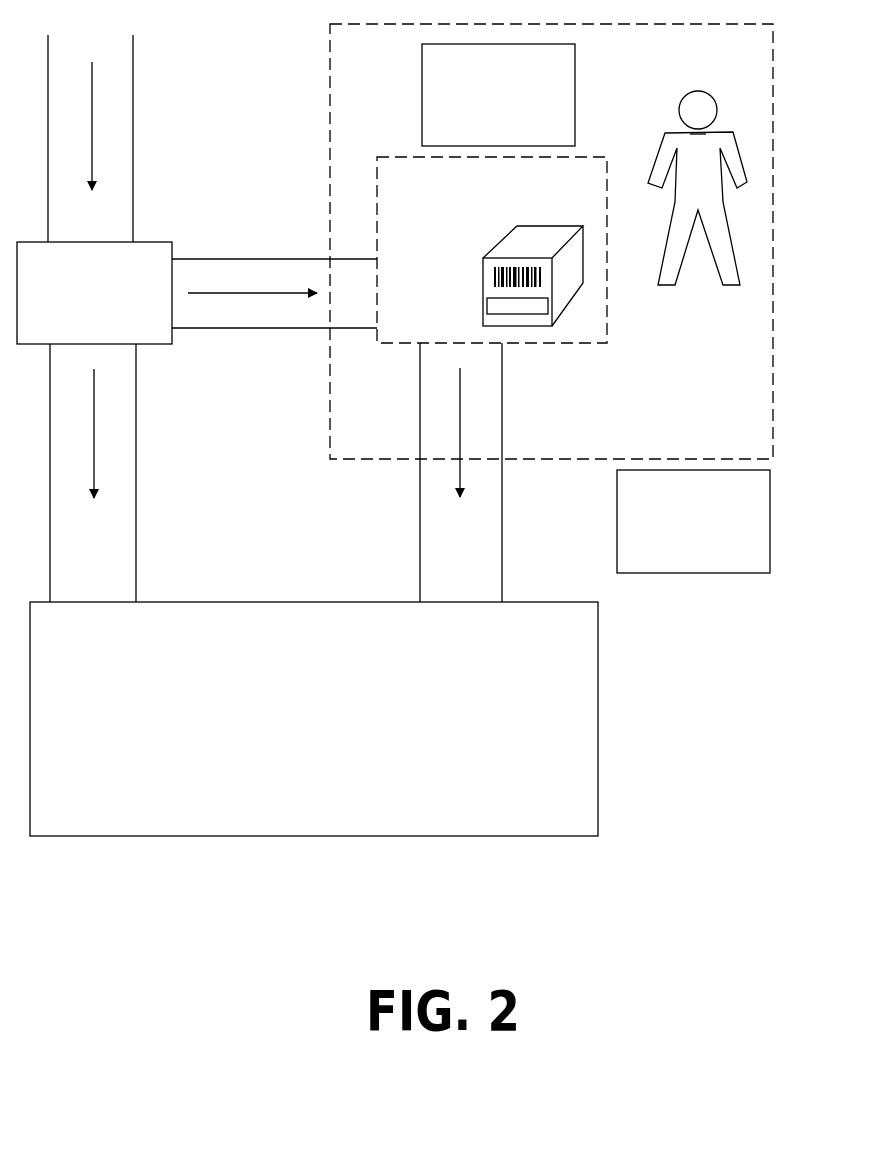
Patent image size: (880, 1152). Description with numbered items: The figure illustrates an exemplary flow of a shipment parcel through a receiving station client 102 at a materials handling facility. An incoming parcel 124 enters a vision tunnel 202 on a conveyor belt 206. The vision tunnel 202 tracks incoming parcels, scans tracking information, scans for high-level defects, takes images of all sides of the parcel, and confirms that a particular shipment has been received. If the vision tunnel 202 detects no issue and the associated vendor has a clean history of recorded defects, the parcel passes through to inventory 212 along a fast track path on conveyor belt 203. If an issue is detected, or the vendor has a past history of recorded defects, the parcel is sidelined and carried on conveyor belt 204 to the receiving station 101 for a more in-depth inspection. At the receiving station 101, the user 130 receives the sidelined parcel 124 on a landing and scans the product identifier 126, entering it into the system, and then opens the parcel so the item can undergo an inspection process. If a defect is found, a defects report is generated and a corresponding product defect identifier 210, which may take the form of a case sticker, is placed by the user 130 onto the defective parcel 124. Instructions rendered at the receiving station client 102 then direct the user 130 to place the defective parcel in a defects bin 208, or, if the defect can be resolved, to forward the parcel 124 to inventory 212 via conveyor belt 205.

The receiving station 101 is at (762, 447).
The receiving station client 102 is at (517, 133).
The incoming parcel 124 is at (517, 240).
The product identifier 126 is at (491, 266).
The user 130 is at (662, 165).
The vision tunnel 202 is at (141, 241).
The conveyor belt 203 is at (136, 434).
The conveyor belt 204 is at (223, 259).
The conveyor belt 205 is at (502, 396).
The conveyor belt 206 is at (133, 119).
The defects bin 208 is at (673, 561).
The product defect identifier 210 is at (488, 298).
The inventory 212 is at (293, 745).